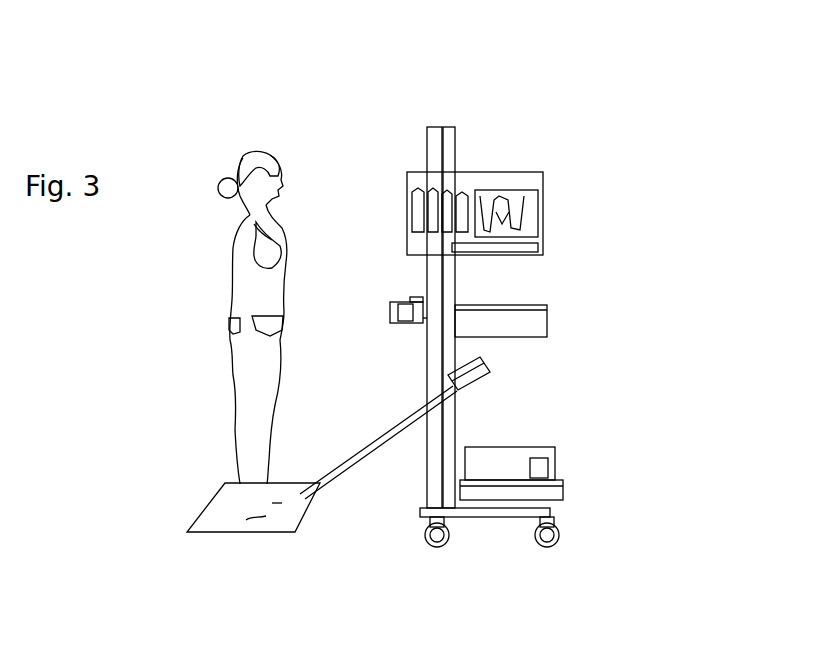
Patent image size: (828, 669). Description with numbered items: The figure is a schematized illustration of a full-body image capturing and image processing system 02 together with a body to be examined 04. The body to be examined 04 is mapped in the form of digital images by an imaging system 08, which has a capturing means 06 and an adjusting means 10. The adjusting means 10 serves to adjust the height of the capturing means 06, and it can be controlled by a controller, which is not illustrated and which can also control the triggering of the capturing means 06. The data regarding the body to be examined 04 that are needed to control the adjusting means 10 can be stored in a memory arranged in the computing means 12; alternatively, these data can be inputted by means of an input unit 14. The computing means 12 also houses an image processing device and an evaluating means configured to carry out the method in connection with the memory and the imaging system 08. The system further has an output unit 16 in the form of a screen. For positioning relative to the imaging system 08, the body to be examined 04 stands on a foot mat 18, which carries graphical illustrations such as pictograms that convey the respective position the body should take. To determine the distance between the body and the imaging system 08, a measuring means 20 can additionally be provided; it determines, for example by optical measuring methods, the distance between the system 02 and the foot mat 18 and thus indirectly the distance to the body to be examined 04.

The full-body image capturing and image processing system 02 is at (575, 79).
The body to be examined 04 is at (236, 137).
The capturing means 06 is at (354, 342).
The imaging system 08 is at (380, 295).
The adjusting means 10 is at (426, 145).
The computing means 12 is at (548, 468).
The input unit 14 is at (558, 309).
The output unit 16 is at (542, 195).
The foot mat 18 is at (227, 545).
The measuring means 20 is at (485, 389).